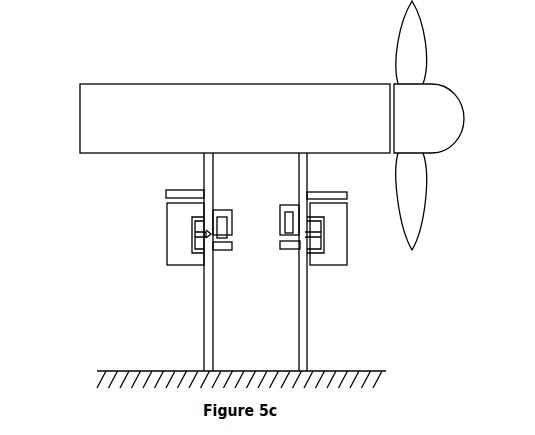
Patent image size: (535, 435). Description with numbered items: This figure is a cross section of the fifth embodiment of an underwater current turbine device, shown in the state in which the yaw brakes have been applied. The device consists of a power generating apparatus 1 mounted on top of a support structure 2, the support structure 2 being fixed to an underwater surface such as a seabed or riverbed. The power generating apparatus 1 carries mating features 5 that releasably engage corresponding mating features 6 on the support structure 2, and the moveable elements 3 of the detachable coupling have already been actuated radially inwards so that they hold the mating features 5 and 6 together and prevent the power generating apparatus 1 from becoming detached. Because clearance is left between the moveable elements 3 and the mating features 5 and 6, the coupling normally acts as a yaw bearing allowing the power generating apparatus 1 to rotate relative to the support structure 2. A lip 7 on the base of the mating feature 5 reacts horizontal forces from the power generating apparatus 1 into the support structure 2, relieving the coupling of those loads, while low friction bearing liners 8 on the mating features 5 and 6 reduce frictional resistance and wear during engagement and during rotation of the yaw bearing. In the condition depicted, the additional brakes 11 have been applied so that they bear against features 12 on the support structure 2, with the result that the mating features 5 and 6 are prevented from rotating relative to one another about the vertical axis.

The power generating apparatus 1 is at (109, 126).
The support structure 2 is at (207, 332).
The moveable elements 3 is at (174, 232).
The mating features 5 is at (197, 228).
The mating features 6 is at (198, 240).
The lip 7 is at (210, 237).
The low friction bearing liners 8 is at (323, 247).
The brakes 11 is at (288, 223).
The features 12 is at (290, 247).